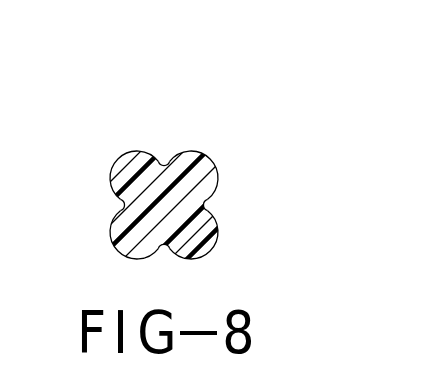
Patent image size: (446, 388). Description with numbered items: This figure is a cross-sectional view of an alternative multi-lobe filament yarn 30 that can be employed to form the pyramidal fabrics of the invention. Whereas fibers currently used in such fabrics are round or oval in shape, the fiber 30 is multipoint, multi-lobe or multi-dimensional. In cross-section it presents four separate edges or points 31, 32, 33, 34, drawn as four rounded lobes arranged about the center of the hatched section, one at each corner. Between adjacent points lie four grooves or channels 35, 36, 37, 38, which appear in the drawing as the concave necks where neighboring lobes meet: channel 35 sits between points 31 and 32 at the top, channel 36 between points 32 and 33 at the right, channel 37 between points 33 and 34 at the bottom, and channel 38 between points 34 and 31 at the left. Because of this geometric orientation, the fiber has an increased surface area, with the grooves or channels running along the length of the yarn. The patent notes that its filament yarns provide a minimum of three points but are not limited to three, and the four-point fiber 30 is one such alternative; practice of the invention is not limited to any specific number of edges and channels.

The filament yarn 30 is at (164, 164).
The edge or point 31 is at (108, 170).
The edge or point 32 is at (220, 173).
The edge or point 33 is at (208, 252).
The edge or point 34 is at (118, 252).
The channel 35 is at (163, 164).
The channel 36 is at (208, 204).
The channel 37 is at (162, 246).
The channel 38 is at (118, 206).